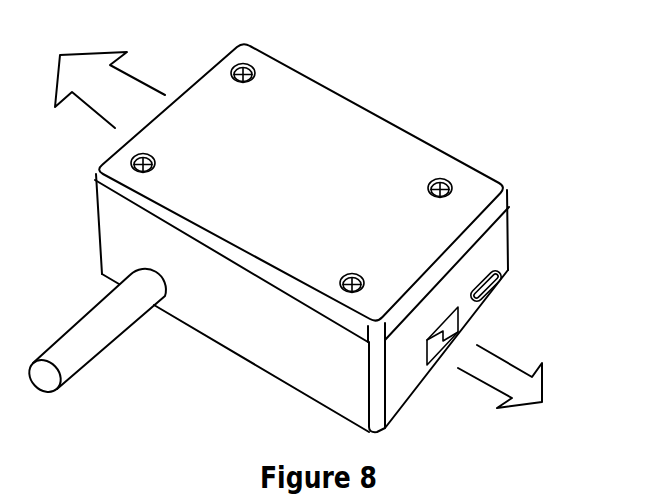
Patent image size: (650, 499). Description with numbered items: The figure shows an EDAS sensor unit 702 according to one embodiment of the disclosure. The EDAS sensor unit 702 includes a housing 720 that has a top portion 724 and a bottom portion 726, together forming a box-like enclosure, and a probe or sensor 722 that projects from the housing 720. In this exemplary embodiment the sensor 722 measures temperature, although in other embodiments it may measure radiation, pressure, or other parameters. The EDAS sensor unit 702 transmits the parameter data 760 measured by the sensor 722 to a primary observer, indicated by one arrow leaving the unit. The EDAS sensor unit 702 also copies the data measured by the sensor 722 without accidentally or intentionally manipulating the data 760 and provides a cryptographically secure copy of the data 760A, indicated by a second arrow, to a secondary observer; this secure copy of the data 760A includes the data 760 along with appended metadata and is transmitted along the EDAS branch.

The EDAS sensor unit 702 is at (422, 53).
The housing 720 is at (426, 135).
The top portion 724 is at (483, 168).
The bottom portion 726 is at (277, 380).
The probe or sensor 722 is at (87, 303).
The parameter data 760 is at (113, 87).
The cryptographically secure copy of the data 760A is at (508, 362).